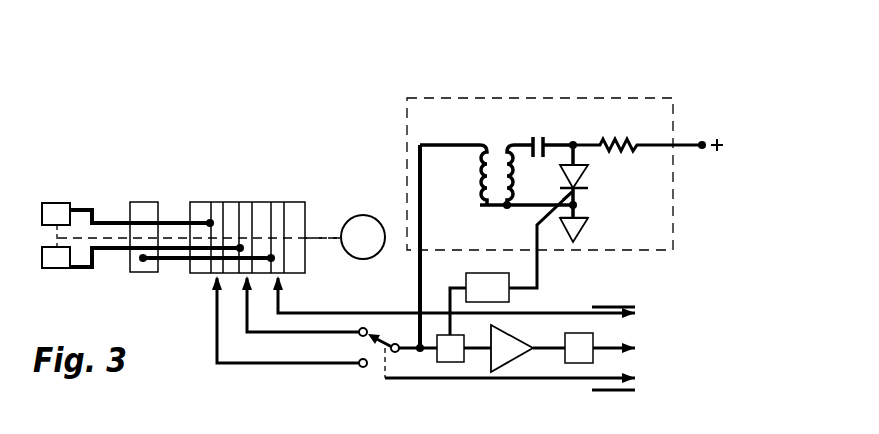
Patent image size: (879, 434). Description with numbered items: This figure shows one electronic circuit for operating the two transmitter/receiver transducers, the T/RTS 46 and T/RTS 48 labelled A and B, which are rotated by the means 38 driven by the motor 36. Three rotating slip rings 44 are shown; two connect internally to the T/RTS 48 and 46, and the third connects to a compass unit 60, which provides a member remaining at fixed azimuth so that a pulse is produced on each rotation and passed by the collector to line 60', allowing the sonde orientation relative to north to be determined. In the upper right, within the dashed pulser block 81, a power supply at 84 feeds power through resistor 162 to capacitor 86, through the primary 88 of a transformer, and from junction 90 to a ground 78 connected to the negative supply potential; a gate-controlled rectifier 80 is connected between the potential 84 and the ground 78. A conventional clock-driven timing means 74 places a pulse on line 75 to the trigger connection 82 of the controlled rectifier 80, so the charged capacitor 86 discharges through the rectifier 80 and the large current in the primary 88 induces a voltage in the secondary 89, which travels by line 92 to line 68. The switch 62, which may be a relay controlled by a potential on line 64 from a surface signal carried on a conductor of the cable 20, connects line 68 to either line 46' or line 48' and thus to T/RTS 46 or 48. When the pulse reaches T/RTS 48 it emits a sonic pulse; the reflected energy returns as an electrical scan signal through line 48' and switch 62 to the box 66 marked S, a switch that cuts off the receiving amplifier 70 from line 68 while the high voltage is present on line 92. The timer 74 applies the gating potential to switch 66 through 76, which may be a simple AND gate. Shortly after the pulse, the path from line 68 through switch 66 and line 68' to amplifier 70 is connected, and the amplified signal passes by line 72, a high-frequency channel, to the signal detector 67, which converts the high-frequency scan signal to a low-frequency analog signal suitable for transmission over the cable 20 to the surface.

The T/RTS 46 is at (128, 200).
The T/RTS 48 is at (143, 271).
The compass unit 60 is at (202, 239).
The rotating means 38 is at (312, 235).
The rotating slip rings 44 is at (278, 202).
The motor 36 is at (385, 215).
The line 60' is at (454, 297).
The line 48' is at (302, 339).
The line 46' is at (286, 334).
The switch 62 is at (377, 380).
The line 68 is at (398, 321).
The line 64 is at (433, 382).
The switch 66 is at (448, 363).
The line 68' is at (491, 380).
The receiving amplifier 70 is at (512, 333).
The line 72 is at (545, 350).
The signal detector 67 is at (597, 338).
The cable 20 is at (610, 392).
The line 92 is at (418, 285).
The line 76 is at (447, 295).
The timing means 74 is at (485, 273).
The line 75 is at (537, 272).
The pulser 81 is at (587, 98).
The secondary 89 is at (483, 148).
The primary 88 is at (503, 143).
The junction 90 is at (507, 208).
The capacitor 86 is at (547, 140).
The resistor 162 is at (620, 142).
The power supply 84 is at (703, 140).
The controlled rectifier 80 is at (585, 175).
The trigger connection 82 is at (563, 197).
The ground 78 is at (588, 225).